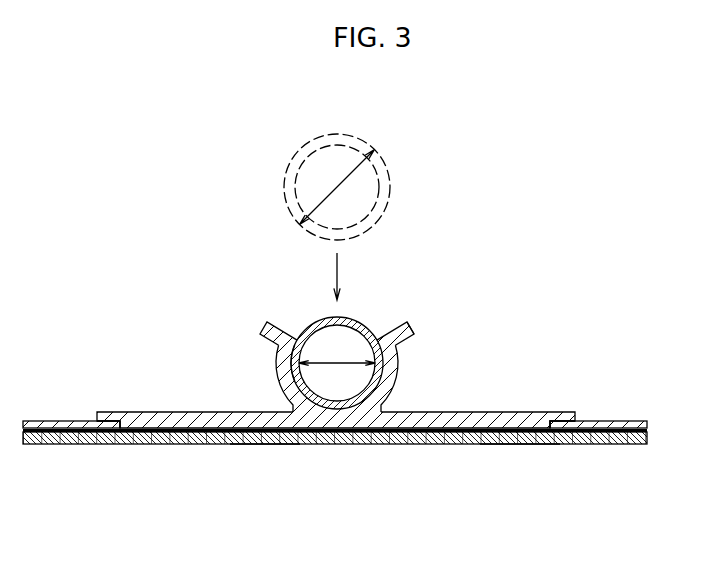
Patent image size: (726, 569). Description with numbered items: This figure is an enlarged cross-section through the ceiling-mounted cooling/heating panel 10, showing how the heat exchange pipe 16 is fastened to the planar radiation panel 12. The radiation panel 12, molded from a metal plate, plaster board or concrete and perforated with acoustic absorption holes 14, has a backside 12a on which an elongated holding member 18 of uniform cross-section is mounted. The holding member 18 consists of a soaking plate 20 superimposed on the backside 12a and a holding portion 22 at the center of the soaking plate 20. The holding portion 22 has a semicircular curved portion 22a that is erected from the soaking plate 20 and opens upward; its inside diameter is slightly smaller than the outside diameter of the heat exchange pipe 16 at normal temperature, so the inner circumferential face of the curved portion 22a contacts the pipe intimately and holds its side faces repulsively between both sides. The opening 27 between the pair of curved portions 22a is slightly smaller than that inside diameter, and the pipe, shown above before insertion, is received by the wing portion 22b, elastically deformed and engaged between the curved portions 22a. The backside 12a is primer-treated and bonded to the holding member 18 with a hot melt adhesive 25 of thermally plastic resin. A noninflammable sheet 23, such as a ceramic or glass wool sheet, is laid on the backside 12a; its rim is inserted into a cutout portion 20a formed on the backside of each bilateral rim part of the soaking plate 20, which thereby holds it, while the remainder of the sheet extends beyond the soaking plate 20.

The ceiling-mounted cooling/heating panel 10 is at (548, 296).
The radiation panel 12 is at (438, 443).
The backside 12a is at (510, 445).
The acoustic absorption hole 14 is at (377, 434).
The heat exchange pipe 16 is at (383, 163).
The holding member 18 is at (431, 298).
The soaking plate 20 is at (466, 412).
The cutout portion 20a is at (563, 412).
The holding portion 22 is at (388, 393).
The curved portion 22a is at (278, 367).
The wing portion 22b is at (258, 327).
The noninflammable sheet 23 is at (77, 420).
The hot melt adhesive 25 is at (262, 445).
The opening 27 is at (305, 315).